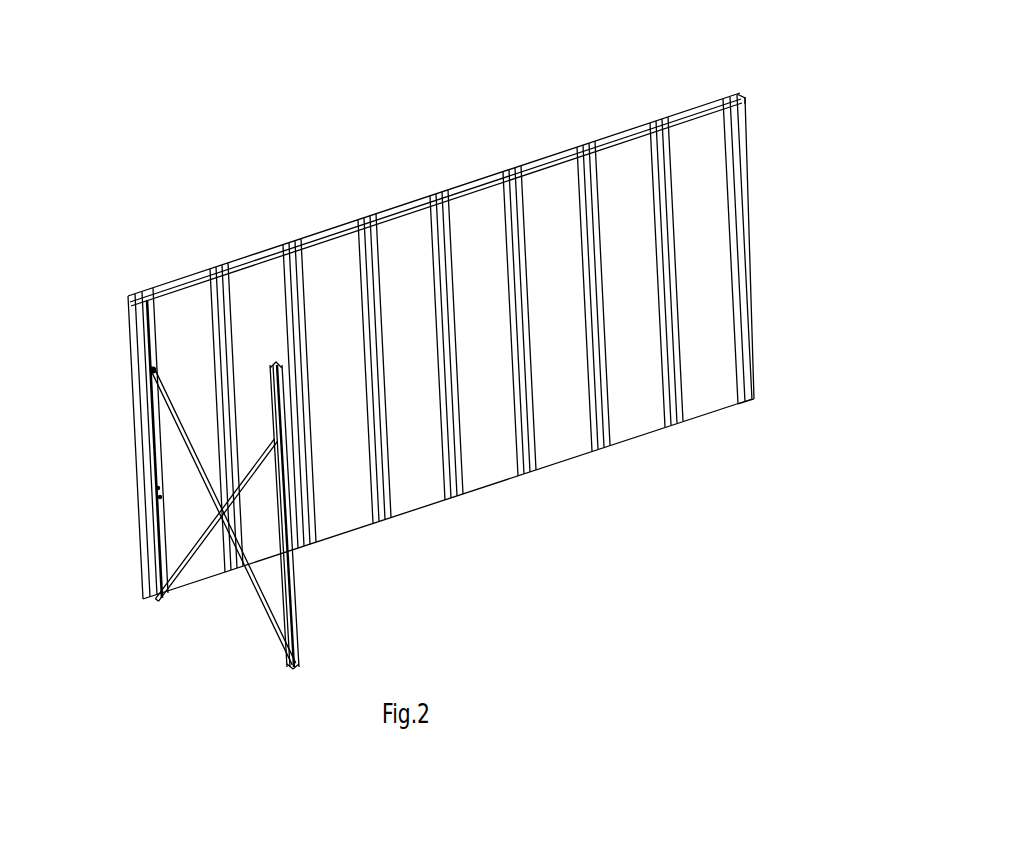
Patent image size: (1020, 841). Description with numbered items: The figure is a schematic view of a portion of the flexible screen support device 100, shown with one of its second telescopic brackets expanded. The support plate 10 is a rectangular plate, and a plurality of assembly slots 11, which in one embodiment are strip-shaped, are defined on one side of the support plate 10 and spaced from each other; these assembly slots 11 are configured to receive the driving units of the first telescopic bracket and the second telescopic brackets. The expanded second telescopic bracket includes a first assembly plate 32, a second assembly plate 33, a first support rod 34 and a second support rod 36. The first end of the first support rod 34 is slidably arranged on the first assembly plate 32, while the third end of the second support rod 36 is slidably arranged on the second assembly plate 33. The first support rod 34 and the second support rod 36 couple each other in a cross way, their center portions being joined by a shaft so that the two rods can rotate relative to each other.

The flexible screen support device 100 is at (417, 150).
The support plate 10 is at (187, 377).
The assembly slots 11 is at (527, 413).
The first assembly plate 32 is at (143, 531).
The second assembly plate 33 is at (296, 581).
The first support rod 34 is at (166, 593).
The second support rod 36 is at (251, 578).